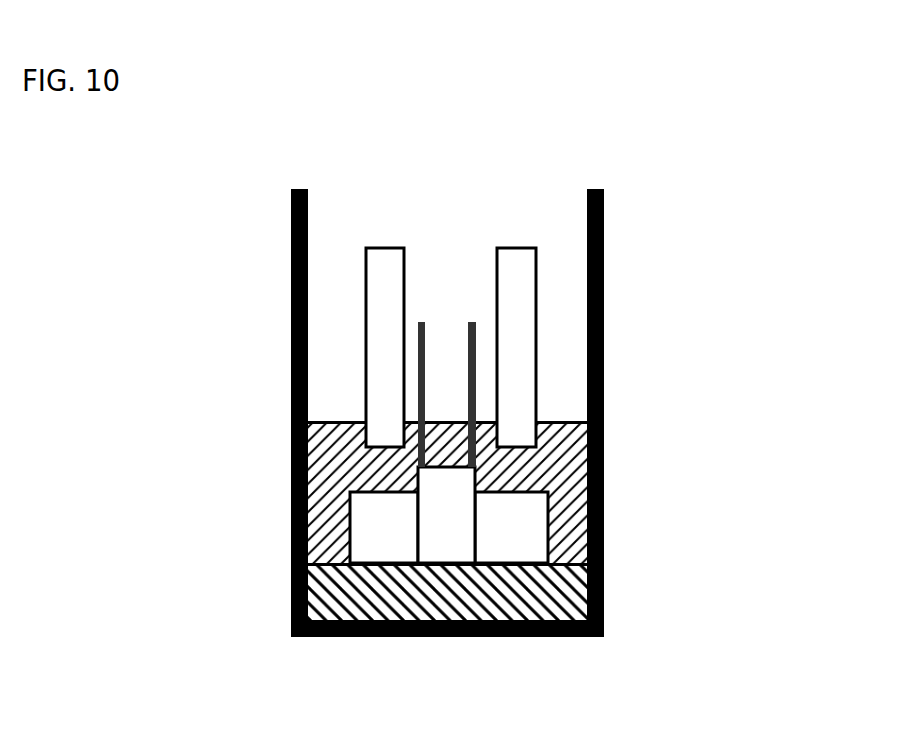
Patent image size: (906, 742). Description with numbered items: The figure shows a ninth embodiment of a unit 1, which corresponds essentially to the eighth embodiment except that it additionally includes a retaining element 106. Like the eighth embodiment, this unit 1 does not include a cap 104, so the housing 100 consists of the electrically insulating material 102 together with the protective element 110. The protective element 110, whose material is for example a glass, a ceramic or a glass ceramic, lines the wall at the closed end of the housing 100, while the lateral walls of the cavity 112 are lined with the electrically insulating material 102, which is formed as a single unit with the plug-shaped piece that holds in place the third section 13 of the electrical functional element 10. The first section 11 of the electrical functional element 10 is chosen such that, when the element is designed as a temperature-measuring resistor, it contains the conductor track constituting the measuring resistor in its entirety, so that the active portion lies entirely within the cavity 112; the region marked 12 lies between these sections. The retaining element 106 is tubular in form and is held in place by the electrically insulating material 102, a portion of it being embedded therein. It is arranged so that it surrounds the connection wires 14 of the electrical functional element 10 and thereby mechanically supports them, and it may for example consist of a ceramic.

The unit 1 is at (636, 157).
The housing 100 is at (607, 259).
The electrical functional element 10 is at (481, 399).
The connection wires 14 is at (418, 342).
The upper region 12 is at (615, 320).
The third section 13 is at (615, 422).
The first section 11 is at (615, 483).
The electrically insulating material 102 is at (340, 528).
The retaining element 106 is at (378, 372).
The cavity 112 is at (385, 543).
The cap 104 is at (310, 557).
The protective element 110 is at (547, 583).